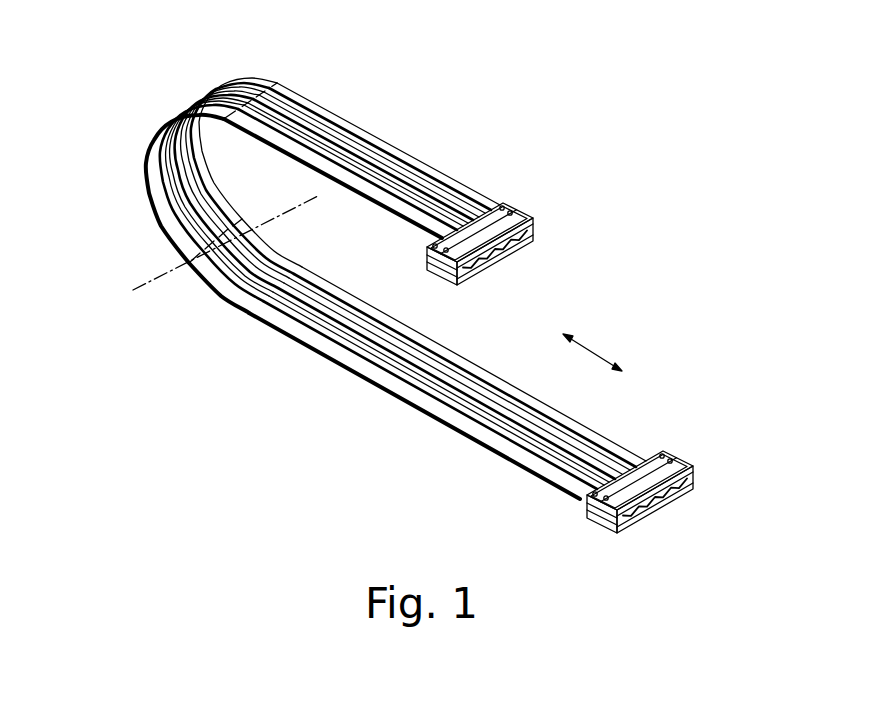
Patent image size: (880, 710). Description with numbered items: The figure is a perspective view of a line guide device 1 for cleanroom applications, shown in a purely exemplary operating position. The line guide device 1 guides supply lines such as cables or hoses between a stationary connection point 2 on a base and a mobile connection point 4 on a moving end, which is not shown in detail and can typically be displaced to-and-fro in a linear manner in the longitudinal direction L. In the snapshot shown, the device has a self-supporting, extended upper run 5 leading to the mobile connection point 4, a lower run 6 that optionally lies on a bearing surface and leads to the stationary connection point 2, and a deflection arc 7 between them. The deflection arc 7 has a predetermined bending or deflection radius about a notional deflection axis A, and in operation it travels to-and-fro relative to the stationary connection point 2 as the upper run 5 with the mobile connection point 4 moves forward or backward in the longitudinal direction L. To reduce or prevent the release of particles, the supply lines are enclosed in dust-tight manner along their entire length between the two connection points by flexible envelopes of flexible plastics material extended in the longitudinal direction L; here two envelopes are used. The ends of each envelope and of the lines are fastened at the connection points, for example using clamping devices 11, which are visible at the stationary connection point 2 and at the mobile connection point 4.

The line guide device 1 is at (512, 128).
The stationary connection point 2 is at (680, 450).
The mobile connection point 4 is at (535, 207).
The upper run 5 is at (374, 157).
The lower run 6 is at (460, 385).
The deflection arc 7 is at (203, 203).
The clamping devices 11 is at (446, 274).
The deflection axis A is at (133, 290).
The longitudinal direction L is at (592, 350).